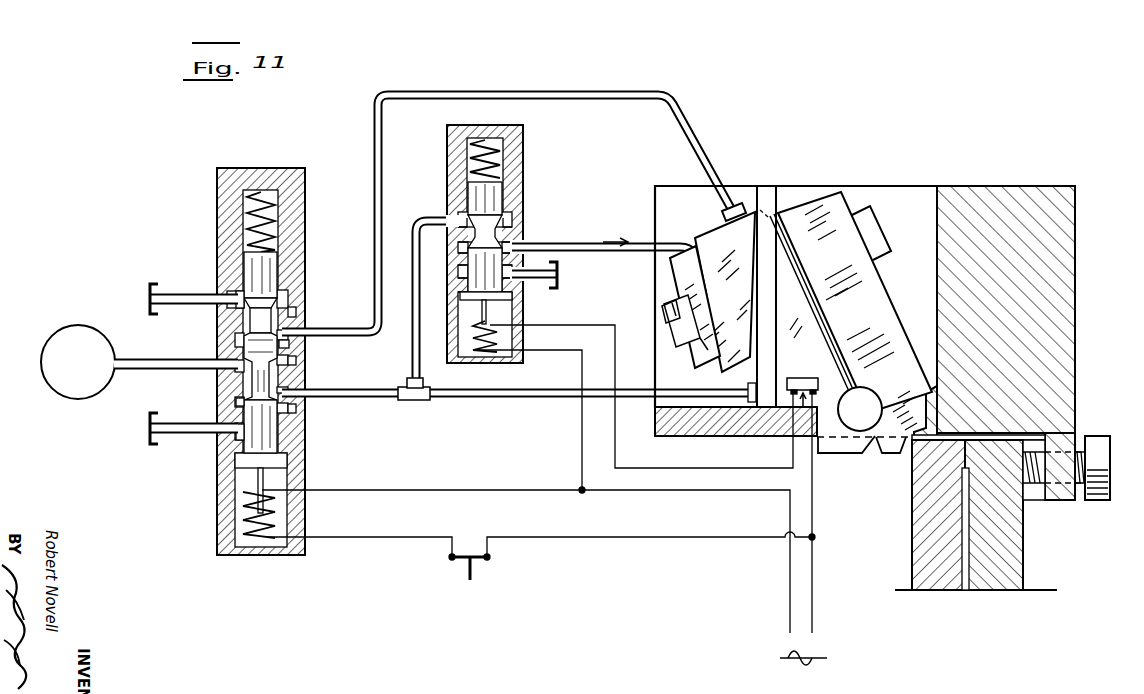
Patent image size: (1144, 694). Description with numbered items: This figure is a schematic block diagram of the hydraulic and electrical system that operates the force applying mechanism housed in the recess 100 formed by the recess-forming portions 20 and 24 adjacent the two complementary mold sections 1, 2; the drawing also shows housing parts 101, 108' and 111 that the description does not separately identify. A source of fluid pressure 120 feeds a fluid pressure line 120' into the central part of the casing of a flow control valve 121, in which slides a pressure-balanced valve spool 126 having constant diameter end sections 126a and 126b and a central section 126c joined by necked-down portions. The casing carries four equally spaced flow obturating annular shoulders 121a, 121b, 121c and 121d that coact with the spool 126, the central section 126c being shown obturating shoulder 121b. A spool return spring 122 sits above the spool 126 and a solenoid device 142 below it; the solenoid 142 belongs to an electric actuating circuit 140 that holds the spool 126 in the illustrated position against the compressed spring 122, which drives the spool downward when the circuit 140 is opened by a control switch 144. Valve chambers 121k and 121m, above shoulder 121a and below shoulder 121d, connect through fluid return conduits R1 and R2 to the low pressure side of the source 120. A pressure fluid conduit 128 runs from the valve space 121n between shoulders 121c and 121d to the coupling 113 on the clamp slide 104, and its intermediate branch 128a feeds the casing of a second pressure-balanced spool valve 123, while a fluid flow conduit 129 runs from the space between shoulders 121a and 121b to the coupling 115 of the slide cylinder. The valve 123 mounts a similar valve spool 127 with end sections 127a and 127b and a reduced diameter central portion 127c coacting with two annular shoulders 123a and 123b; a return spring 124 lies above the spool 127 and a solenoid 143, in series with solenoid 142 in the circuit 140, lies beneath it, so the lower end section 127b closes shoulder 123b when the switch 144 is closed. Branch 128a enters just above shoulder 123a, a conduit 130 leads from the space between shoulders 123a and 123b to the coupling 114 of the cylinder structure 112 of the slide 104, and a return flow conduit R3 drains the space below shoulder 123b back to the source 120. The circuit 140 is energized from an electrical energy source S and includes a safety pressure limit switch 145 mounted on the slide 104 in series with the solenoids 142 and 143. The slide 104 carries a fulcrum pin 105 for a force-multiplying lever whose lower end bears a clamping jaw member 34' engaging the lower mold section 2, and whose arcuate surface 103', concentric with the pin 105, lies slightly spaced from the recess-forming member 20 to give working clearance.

The flow control valve 121 is at (222, 214).
The spool return spring 122 is at (262, 190).
The cylindrical end section 126a is at (262, 278).
The pressure-balanced valve spool 126 is at (250, 442).
The central section 126c is at (250, 370).
The cylindrical end section 126b is at (262, 434).
The solenoid device 142 is at (272, 540).
The valve chamber 121k is at (240, 296).
The flow obturating annular shoulder 121a is at (296, 312).
The flow obturating annular shoulder 121b is at (288, 343).
The flow obturating annular shoulder 121c is at (296, 362).
The flow obturating annular shoulder 121d is at (296, 408).
The valve space 121n is at (240, 400).
The valve chamber 121m is at (240, 425).
The fluid return conduit R1 is at (150, 298).
The source of fluid pressure 120 is at (78, 350).
The fluid pressure line 120' is at (175, 382).
The fluid return conduit R2 is at (150, 429).
The fluid flow conduit 129 is at (373, 190).
The intermediate branch conduit 128a is at (412, 338).
The pressure fluid conduit 128 is at (412, 401).
The pressure-balanced spool valve 123 is at (447, 191).
The valve spool return spring 124 is at (468, 146).
The cylindrical end section 127a is at (505, 198).
The pressure-balanced valve spool 127 is at (472, 275).
The cylindrical end section 127b is at (512, 298).
The reduced diameter central portion 127c is at (446, 217).
The flow obturating annular shoulder 123a is at (520, 238).
The flow obturating annular shoulder 123b is at (525, 272).
The return flow conduit R3 is at (560, 278).
The fluid flow conduit 130 is at (646, 243).
The solenoid 143 is at (470, 358).
The electric actuating circuit 140 is at (632, 527).
The control switch 144 is at (484, 548).
The electrical energy source S is at (803, 666).
The housing 101 is at (958, 192).
The recess-forming member 20 is at (1062, 337).
The partition plate 108' is at (785, 296).
The coupling 113 is at (723, 436).
The recess-forming structure portion 24 is at (676, 434).
The safety pressure limit switch 145 is at (789, 436).
The slide 104 is at (825, 371).
The fulcrum pin 105 is at (858, 425).
The clamping jaw member 34' is at (891, 459).
The arcuate surface 103' is at (911, 408).
The lower mold section 2 is at (915, 541).
The mold section 1 is at (1022, 541).
The recess 100 is at (855, 302).
The leaf spring 111 is at (780, 226).
The coupling 114 is at (700, 240).
The coupling 115 is at (738, 206).
The cylinder structure 112 is at (698, 279).